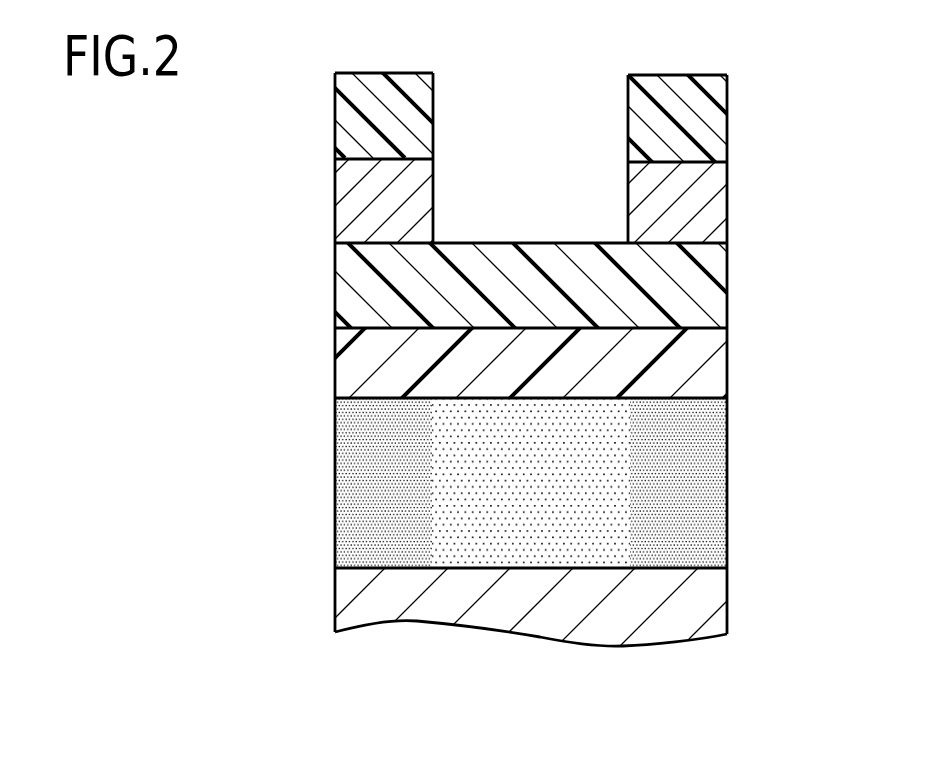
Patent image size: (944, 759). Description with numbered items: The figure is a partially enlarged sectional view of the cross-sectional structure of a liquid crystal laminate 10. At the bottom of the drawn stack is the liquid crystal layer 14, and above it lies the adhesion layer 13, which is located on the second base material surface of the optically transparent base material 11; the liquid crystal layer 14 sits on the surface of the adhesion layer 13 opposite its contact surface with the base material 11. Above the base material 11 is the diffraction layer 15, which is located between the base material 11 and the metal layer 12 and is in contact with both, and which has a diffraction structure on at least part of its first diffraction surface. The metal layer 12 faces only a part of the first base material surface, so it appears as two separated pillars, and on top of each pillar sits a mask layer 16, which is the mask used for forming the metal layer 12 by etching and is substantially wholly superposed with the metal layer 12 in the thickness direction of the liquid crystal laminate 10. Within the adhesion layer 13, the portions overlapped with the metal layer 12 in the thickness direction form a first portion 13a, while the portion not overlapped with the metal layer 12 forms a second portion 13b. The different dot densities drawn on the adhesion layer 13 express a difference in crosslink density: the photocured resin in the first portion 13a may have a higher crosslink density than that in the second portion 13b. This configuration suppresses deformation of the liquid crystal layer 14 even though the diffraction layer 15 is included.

The liquid crystal laminate 10 is at (777, 48).
The base material 11 is at (728, 361).
The metal layer 12 is at (728, 202).
The adhesion layer 13 is at (530, 537).
The first portion 13a is at (340, 498).
The second portion 13b is at (482, 556).
The liquid crystal layer 14 is at (728, 588).
The diffraction layer 15 is at (728, 309).
The mask layer 16 is at (728, 126).